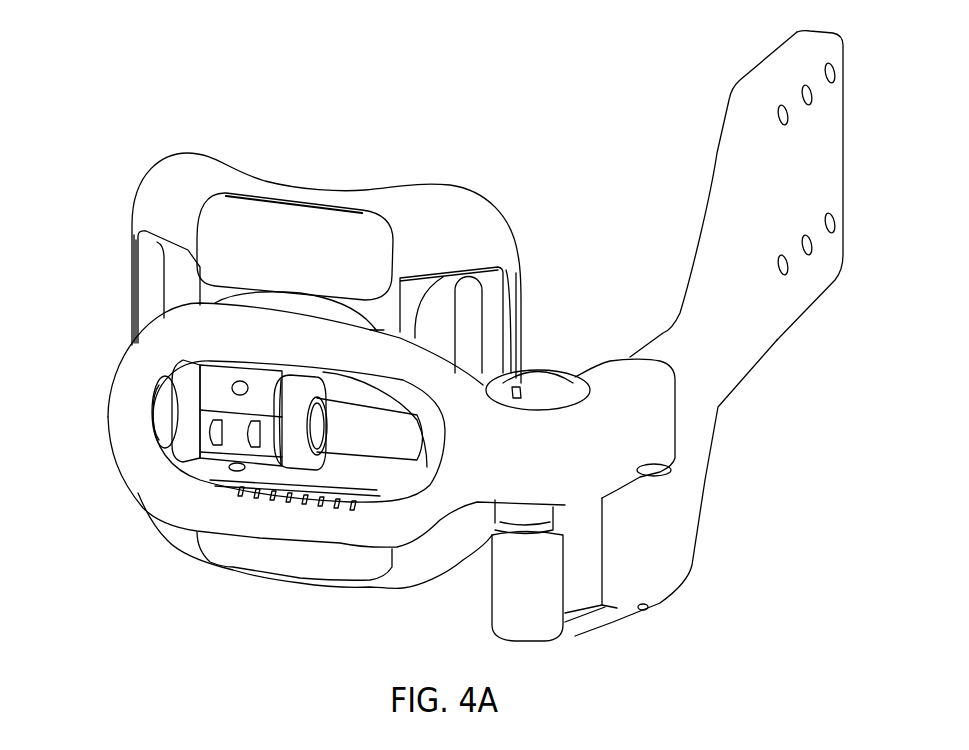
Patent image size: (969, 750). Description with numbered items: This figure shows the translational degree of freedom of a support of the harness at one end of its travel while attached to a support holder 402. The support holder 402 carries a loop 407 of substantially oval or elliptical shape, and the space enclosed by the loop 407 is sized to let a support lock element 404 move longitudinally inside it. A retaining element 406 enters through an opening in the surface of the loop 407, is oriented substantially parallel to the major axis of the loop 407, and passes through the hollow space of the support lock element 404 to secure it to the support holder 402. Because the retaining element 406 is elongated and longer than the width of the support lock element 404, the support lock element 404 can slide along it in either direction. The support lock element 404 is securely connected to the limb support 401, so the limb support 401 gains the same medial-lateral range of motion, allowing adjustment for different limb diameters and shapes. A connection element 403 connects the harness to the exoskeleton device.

The limb support 401 is at (168, 213).
The support holder 402 is at (111, 491).
The connection element 403 is at (822, 200).
The support lock element 404 is at (230, 442).
The retaining element 406 is at (380, 435).
The loop 407 is at (131, 386).